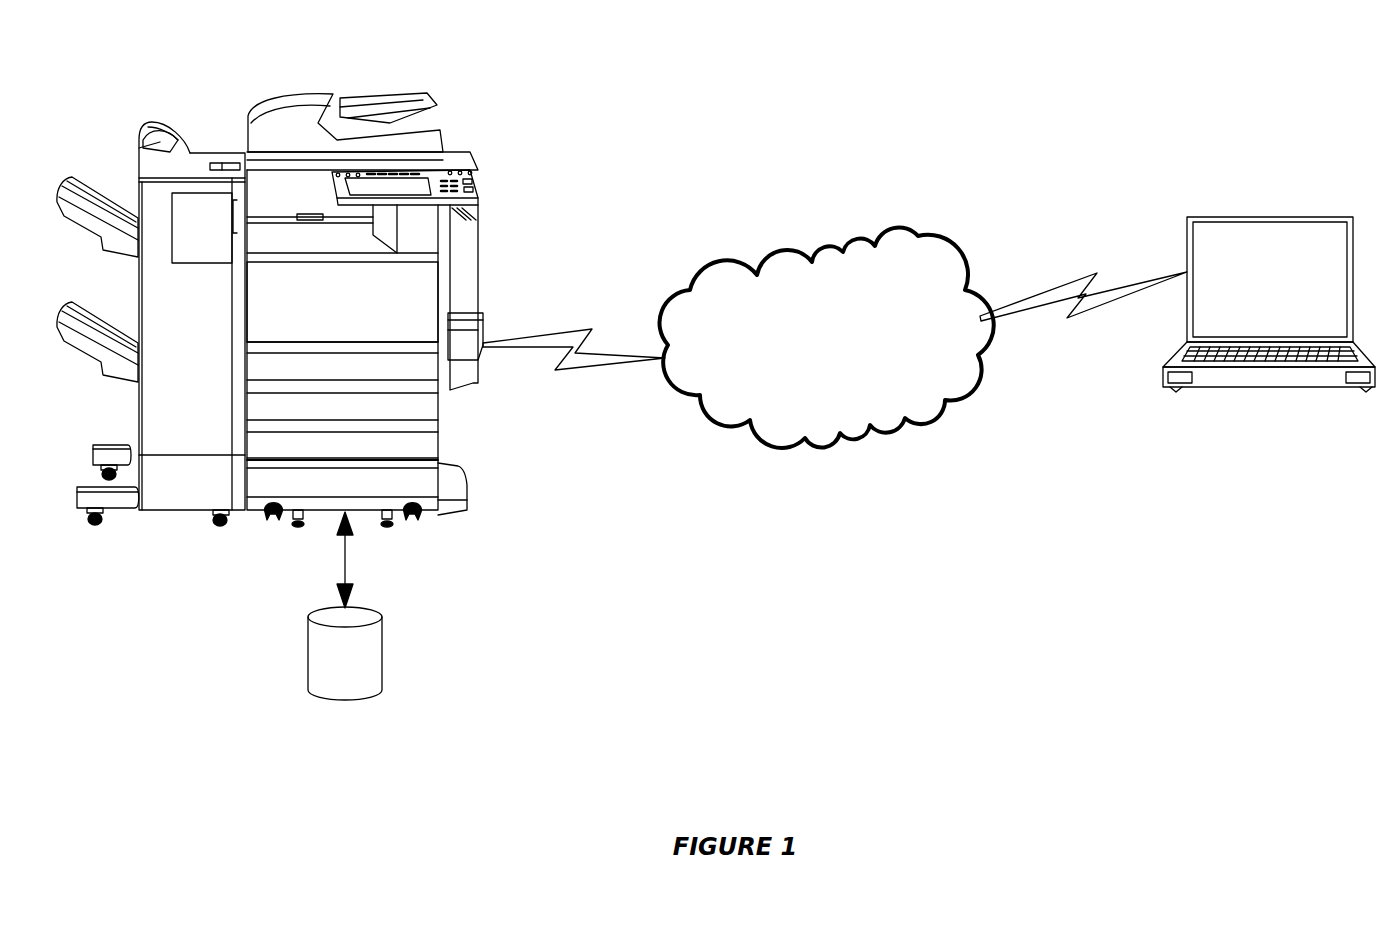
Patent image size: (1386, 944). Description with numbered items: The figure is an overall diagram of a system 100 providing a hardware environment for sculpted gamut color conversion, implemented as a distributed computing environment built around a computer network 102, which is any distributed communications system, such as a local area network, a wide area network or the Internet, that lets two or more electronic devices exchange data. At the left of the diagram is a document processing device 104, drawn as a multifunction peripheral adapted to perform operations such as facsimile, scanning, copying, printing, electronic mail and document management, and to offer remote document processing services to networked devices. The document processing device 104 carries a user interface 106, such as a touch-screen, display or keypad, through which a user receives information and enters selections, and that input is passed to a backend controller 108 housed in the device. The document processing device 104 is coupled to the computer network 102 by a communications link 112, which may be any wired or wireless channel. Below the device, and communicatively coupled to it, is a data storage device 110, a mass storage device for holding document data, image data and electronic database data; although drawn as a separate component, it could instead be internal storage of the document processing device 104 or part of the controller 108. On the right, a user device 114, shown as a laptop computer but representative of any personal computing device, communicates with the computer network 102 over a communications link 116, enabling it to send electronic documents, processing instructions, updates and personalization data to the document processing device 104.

The system 100 is at (1037, 100).
The computer network 102 is at (900, 214).
The document processing device 104 is at (290, 96).
The user interface 106 is at (478, 187).
The controller 108 is at (438, 291).
The data storage device 110 is at (378, 616).
The communications link 112 is at (593, 327).
The user device 114 is at (1260, 214).
The communications link 116 is at (1097, 273).